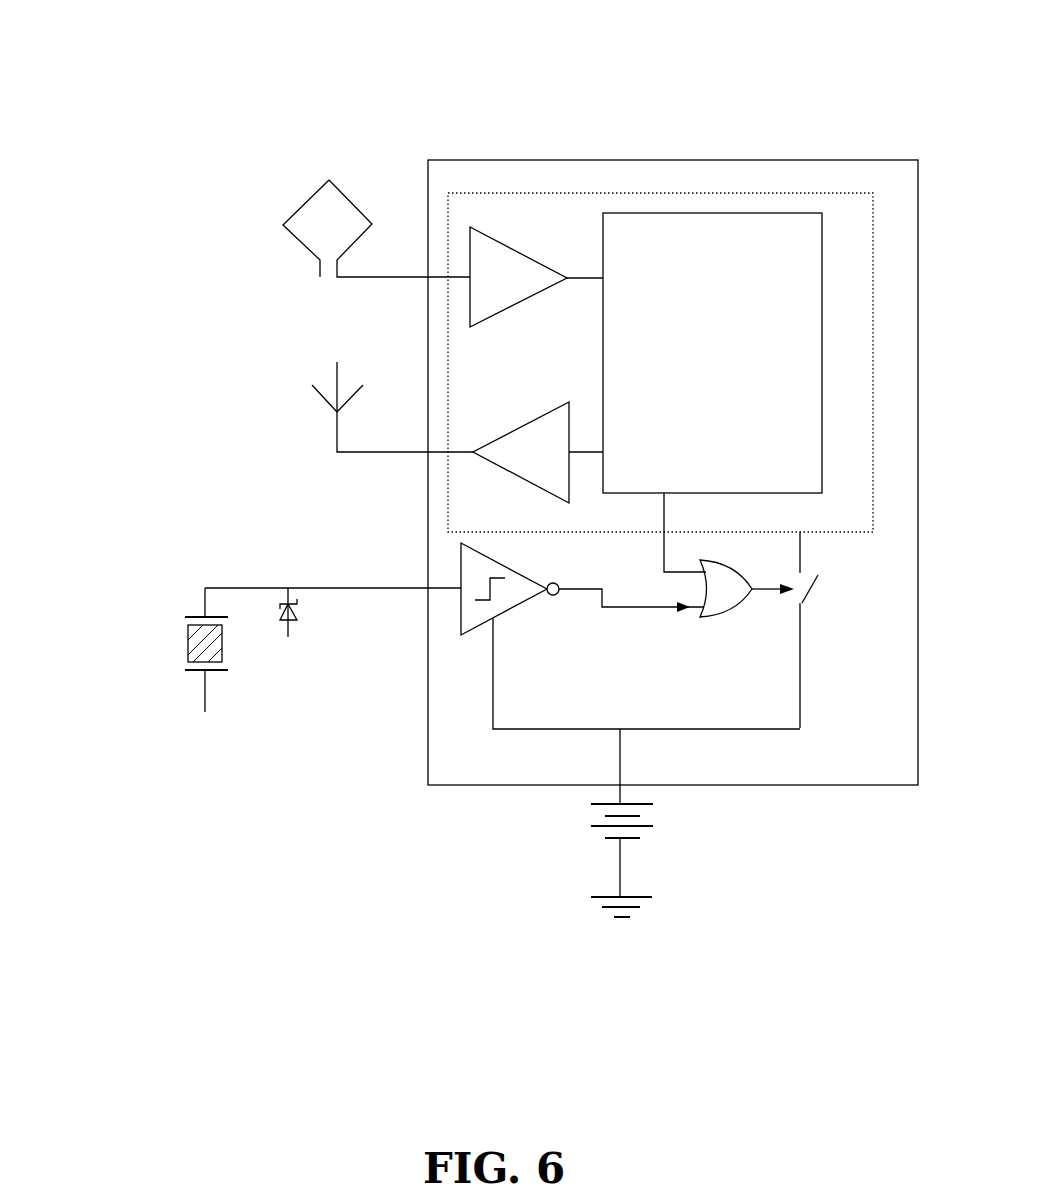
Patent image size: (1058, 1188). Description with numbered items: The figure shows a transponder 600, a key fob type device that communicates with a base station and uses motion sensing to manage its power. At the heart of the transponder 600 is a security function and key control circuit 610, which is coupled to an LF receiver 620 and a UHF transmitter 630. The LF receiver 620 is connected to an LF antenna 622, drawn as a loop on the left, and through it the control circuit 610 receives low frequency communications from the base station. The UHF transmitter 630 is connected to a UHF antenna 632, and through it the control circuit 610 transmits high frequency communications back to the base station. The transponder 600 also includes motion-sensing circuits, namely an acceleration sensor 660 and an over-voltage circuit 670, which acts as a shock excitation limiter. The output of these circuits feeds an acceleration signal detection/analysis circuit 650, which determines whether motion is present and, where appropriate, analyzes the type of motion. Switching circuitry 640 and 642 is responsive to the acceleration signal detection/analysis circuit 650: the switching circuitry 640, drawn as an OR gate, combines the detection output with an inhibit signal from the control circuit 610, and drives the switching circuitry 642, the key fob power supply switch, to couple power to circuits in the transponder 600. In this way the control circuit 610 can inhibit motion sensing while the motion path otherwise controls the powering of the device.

The transponder 600 is at (864, 31).
The security function and key control circuit 610 is at (725, 213).
The LF receiver 620 is at (514, 248).
The LF antenna 622 is at (345, 194).
The UHF transmitter 630 is at (538, 418).
The UHF antenna 632 is at (338, 378).
The switching circuitry 640 is at (728, 566).
The switching circuitry 642 is at (818, 573).
The acceleration signal detection/analysis circuit 650 is at (512, 567).
The acceleration sensor 660 is at (197, 616).
The over-voltage circuit 670 is at (293, 600).